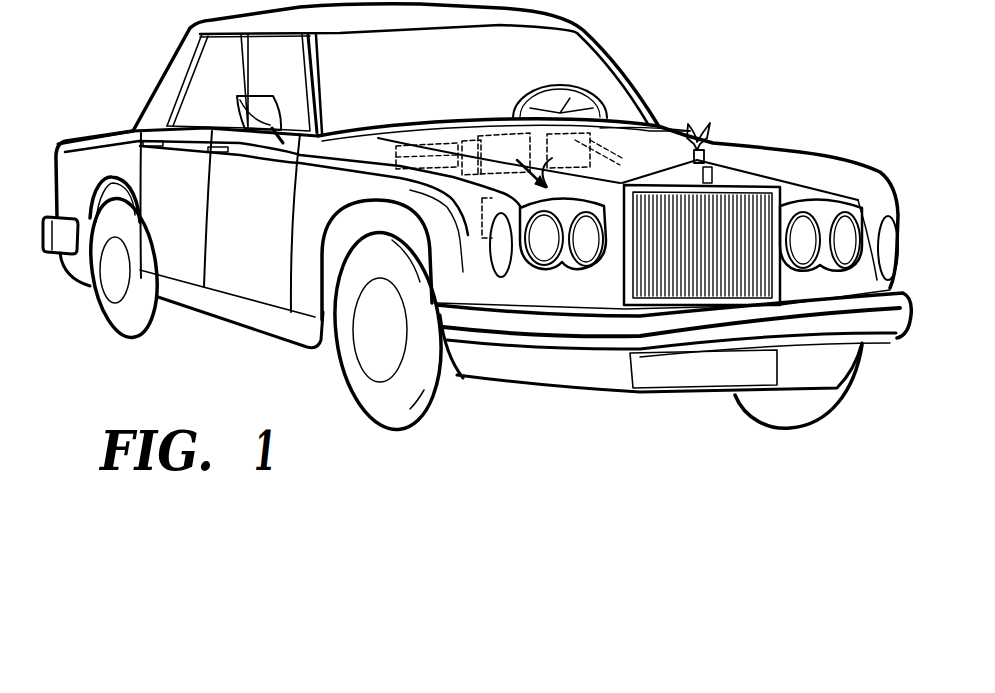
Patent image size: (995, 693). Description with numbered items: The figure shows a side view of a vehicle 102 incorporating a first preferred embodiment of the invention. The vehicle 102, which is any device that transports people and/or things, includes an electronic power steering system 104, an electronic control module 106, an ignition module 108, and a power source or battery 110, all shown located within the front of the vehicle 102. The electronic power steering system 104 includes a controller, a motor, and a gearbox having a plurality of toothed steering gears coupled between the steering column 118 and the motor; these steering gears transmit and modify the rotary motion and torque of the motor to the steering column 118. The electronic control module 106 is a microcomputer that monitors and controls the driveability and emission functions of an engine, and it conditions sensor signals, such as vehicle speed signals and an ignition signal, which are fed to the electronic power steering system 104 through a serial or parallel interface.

The vehicle 102 is at (838, 163).
The electronic power steering system 104 is at (603, 125).
The electronic control module 106 is at (503, 140).
The ignition module 108 is at (447, 143).
The battery 110 is at (487, 218).
The steering column 118 is at (687, 125).